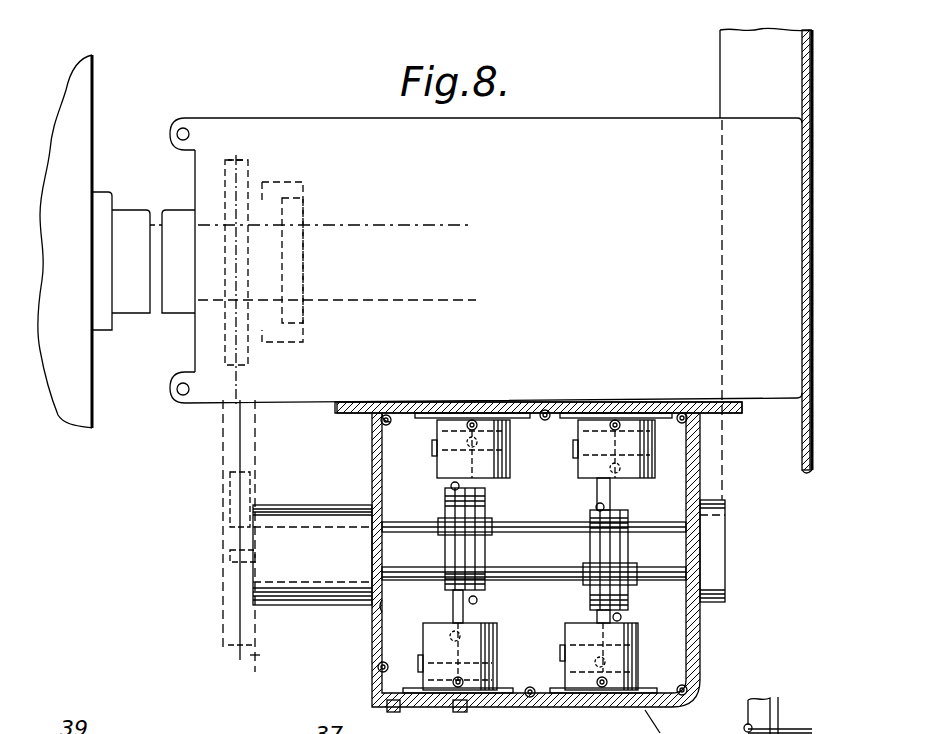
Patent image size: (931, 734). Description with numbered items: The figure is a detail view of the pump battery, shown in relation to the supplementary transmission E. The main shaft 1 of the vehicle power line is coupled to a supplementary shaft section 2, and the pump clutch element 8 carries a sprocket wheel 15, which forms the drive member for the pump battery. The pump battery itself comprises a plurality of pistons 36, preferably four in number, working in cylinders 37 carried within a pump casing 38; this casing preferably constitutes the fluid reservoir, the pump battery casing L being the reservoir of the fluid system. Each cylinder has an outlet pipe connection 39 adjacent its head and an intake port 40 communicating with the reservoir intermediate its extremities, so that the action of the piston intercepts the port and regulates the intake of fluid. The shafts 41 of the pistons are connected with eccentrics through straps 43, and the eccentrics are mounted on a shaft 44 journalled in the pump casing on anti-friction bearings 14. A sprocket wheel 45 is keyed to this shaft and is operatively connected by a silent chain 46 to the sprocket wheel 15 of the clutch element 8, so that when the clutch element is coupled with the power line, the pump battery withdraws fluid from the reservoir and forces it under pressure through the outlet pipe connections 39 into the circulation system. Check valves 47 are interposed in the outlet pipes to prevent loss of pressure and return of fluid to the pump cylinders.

The main shaft 1 is at (155, 232).
The supplementary shaft section 2 is at (340, 235).
The pump clutch element 8 is at (267, 197).
The anti-friction bearings 14 is at (345, 512).
The sprocket wheel 15 is at (225, 345).
The pistons 36 is at (560, 640).
The cylinders 37 is at (640, 640).
The pump casing 38 is at (423, 708).
The outlet pipe connection 39 is at (476, 424).
The intake port 40 is at (432, 450).
The piston shafts 41 is at (453, 612).
The straps 43 is at (279, 724).
The shaft 44 is at (515, 528).
The sprocket wheel 45 is at (230, 627).
The silent chain 46 is at (240, 447).
The check valves 47 is at (162, 728).
The supplementary transmission E is at (661, 130).
The pump battery casing L is at (702, 645).